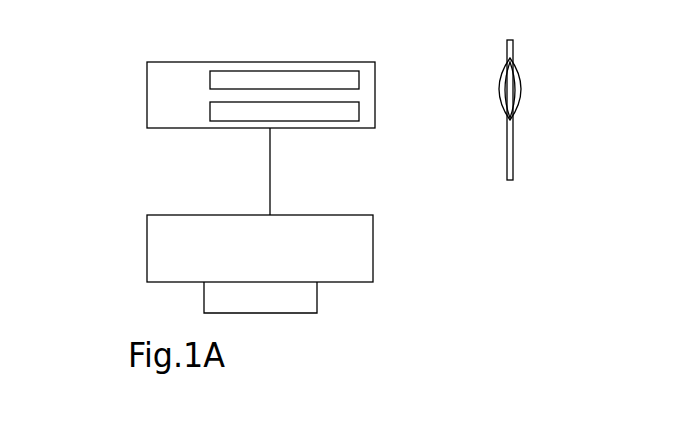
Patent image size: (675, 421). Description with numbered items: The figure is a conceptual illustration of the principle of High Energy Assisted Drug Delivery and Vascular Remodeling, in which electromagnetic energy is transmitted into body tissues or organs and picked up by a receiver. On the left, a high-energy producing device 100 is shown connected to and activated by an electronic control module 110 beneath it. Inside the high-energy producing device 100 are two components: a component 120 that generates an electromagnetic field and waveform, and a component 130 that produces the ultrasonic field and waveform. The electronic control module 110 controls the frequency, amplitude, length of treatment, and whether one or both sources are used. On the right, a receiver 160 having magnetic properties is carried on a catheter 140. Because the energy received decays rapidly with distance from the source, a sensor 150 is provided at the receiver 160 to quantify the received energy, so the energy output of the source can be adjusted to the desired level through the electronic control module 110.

The high-energy producing device 100 is at (209, 138).
The electronic control module 110 is at (218, 251).
The component that generates an electromagnetic field and waveform 120 is at (320, 113).
The component that produces the ultrasonic field and waveform 130 is at (347, 83).
The catheter 140 is at (510, 160).
The sensor 150 is at (518, 108).
The receiver 160 is at (512, 97).